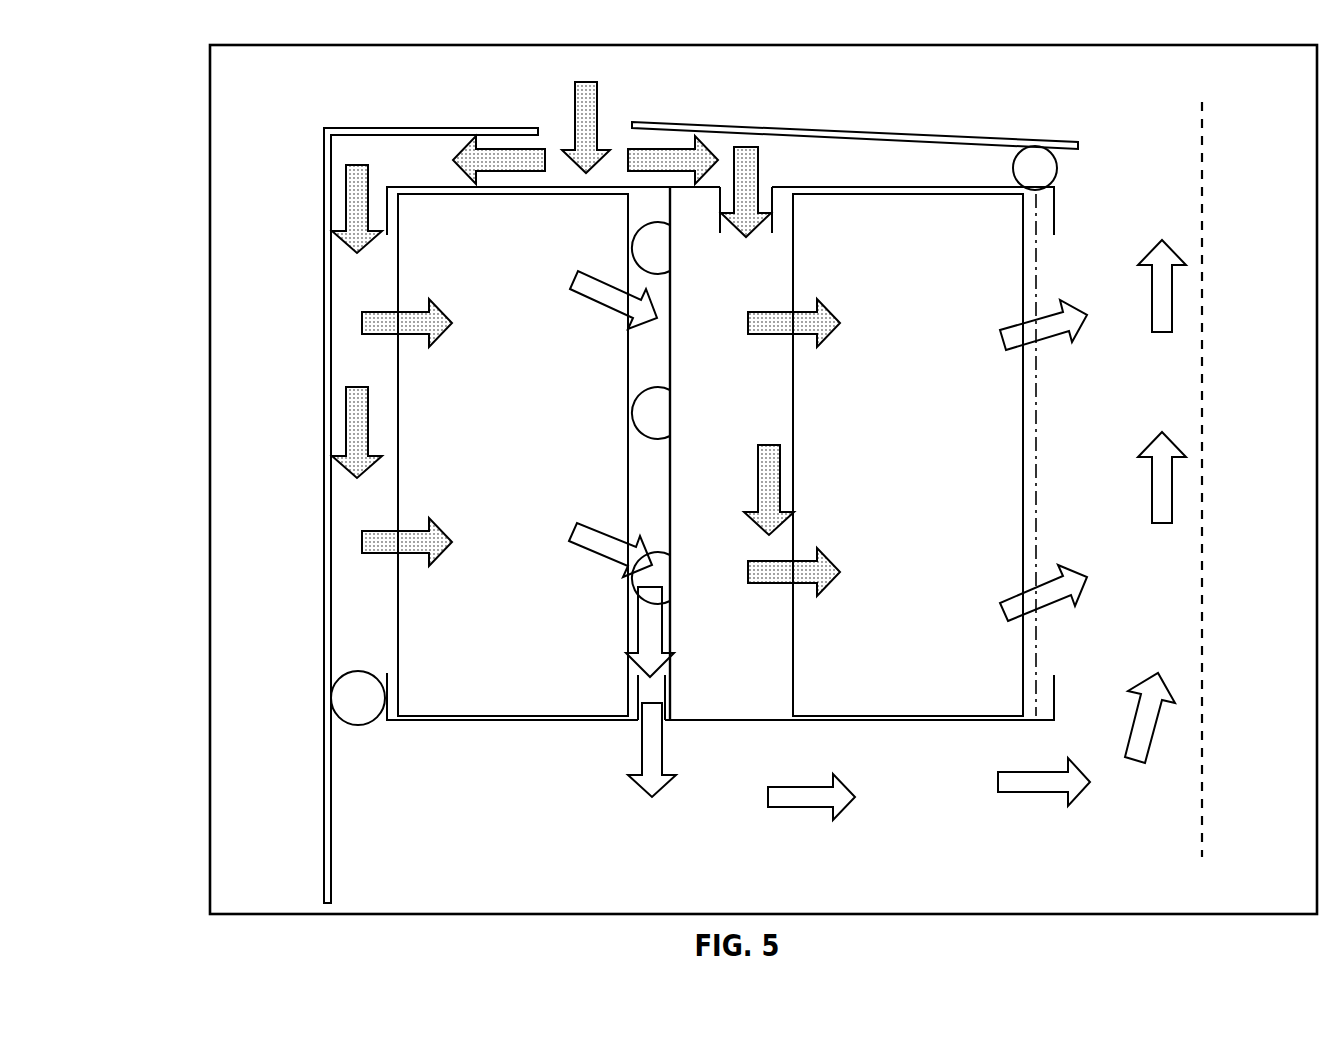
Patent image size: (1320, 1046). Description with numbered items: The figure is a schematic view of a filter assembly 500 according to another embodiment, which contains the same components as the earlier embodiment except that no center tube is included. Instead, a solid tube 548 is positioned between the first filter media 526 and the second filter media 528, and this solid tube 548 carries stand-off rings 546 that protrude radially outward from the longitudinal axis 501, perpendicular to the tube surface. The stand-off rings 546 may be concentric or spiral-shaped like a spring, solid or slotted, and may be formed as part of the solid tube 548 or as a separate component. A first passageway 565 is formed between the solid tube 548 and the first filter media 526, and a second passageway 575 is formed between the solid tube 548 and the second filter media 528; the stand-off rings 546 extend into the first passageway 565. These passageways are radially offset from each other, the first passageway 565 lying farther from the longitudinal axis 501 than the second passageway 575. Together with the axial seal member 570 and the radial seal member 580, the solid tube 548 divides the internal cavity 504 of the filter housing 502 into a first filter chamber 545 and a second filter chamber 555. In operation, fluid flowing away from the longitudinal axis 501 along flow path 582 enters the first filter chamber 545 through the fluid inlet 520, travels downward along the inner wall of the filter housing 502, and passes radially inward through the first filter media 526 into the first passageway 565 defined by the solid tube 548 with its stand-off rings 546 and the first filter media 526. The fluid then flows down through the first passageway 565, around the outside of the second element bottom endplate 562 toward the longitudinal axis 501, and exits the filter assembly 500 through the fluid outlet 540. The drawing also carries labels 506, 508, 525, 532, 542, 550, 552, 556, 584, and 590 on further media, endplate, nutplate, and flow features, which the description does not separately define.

The filter assembly 500 is at (186, 122).
The longitudinal axis 501 is at (1202, 267).
The filter housing 502 is at (322, 368).
The internal cavity 504 is at (350, 496).
The first filter media 506 is at (405, 268).
The second filter media 508 is at (843, 212).
The fluid inlet 520 is at (630, 122).
The outlet opening 525 is at (641, 706).
The first filter media 526 is at (430, 598).
The second filter media 528 is at (960, 668).
The upper frame of filter element 532 is at (402, 192).
The fluid outlet 540 is at (1078, 142).
The lower endplate portion 542 is at (508, 720).
The first filter chamber 545 is at (724, 152).
The stand-off rings 546 is at (655, 253).
The solid tube 548 is at (670, 665).
The nutplate plate 550 is at (960, 135).
The upper endplate 552 is at (992, 187).
The second filter chamber 555 is at (1151, 800).
The center tube 556 is at (1037, 683).
The second element bottom endplate 562 is at (818, 722).
The first passageway 565 is at (664, 706).
The axial seal member 570 is at (1042, 158).
The second passageway 575 is at (764, 182).
The radial seal member 580 is at (348, 697).
The flow path 582 is at (468, 152).
The inlet flow arrow 584 is at (582, 133).
The outlet flow direction 590 is at (1153, 590).